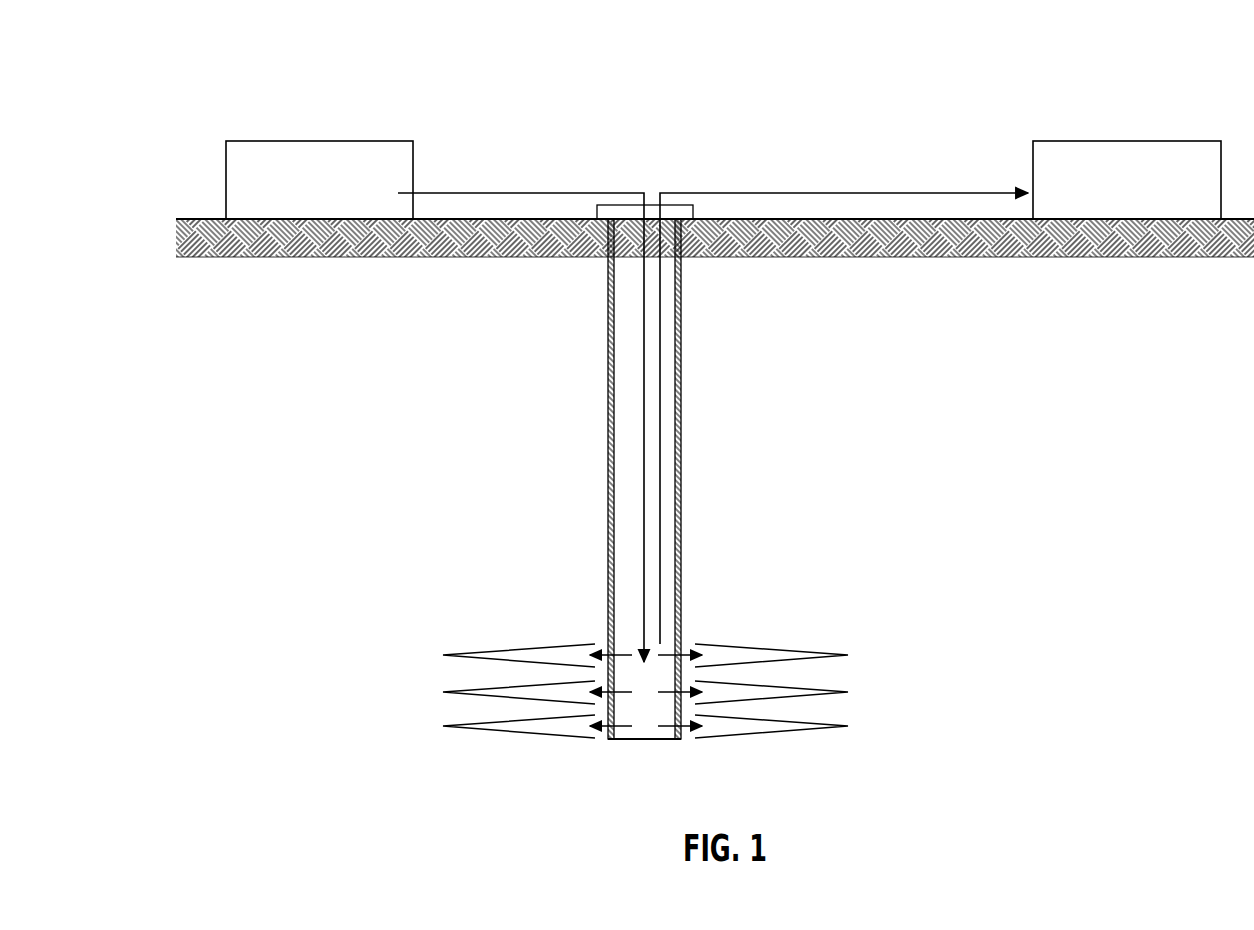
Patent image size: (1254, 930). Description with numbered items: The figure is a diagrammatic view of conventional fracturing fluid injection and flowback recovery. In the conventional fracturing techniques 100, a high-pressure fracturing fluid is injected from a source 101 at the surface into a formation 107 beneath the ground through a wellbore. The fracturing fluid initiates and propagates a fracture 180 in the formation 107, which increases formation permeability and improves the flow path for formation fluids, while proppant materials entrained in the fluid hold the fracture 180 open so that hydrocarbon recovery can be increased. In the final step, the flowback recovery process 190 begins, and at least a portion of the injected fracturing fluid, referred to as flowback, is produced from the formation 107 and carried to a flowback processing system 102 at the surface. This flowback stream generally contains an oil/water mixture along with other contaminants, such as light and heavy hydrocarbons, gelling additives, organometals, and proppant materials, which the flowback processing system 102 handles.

The conventional fracturing techniques 100 is at (486, 44).
The source 101 is at (318, 140).
The flowback processing system 102 is at (1126, 141).
The formation 107 is at (815, 568).
The fracture 180 is at (540, 726).
The flowback recovery process 190 is at (754, 168).